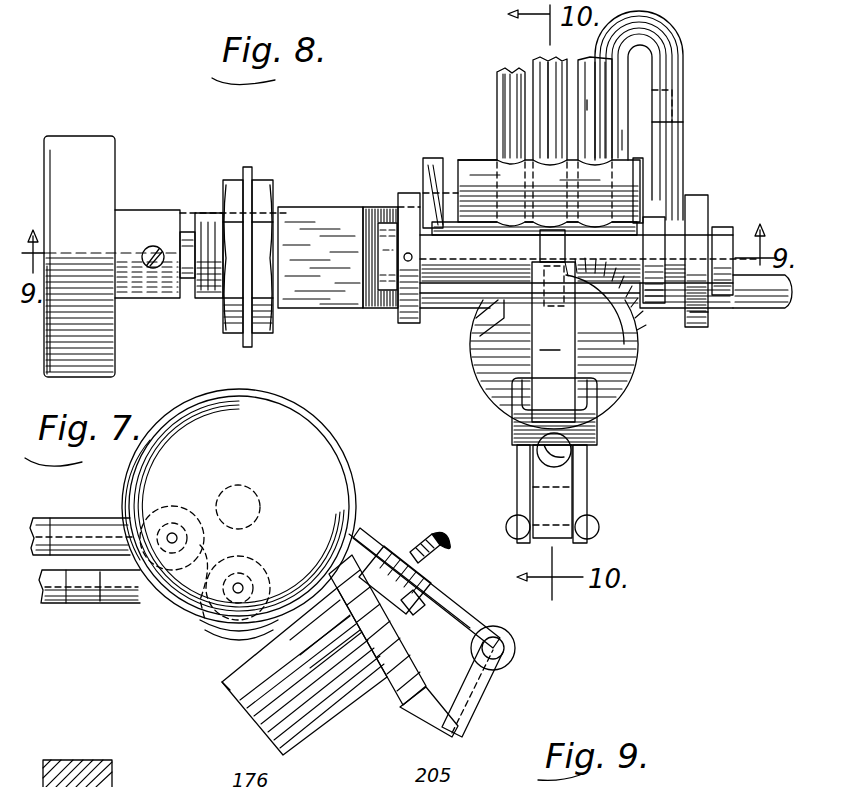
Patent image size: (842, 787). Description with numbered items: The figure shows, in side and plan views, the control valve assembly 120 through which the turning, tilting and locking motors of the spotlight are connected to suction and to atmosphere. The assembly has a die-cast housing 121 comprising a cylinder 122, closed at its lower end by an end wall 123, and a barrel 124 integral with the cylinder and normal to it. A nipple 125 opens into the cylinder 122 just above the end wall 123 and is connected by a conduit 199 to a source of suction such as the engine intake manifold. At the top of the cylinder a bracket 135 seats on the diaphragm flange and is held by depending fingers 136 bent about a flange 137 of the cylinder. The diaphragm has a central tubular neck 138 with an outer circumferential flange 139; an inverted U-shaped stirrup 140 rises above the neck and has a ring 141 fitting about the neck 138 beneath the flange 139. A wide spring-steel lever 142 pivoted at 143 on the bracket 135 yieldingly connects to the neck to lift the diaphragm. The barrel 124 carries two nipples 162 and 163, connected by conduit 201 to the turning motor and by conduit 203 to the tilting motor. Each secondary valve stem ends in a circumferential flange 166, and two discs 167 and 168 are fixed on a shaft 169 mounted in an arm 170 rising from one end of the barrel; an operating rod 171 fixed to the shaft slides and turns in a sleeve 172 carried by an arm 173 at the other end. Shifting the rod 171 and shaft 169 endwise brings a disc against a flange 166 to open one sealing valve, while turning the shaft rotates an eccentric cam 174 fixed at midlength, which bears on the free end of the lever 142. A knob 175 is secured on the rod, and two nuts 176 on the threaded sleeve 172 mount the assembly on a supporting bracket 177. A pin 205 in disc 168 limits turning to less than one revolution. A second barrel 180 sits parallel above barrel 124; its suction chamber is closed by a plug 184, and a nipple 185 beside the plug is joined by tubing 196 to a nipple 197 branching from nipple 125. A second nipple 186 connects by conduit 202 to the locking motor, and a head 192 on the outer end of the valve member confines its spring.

In FIG. 8, the control valve assembly 120 is at (425, 503).
In FIG. 7, the housing 121 is at (210, 686).
In FIG. 8, the cylinder 122 is at (536, 360).
In FIG. 7, the cylinder 122 is at (431, 401).
In FIG. 7, the end wall 123 is at (248, 718).
In FIG. 8, the barrel 124 is at (410, 388).
In FIG. 7, the barrel 124 is at (262, 565).
In FIG. 8, the nipple 125 is at (700, 318).
In FIG. 8, the bracket 135 is at (616, 398).
In FIG. 7, the depending fingers 136 is at (420, 708).
In FIG. 8, the flange 137 is at (457, 306).
In FIG. 7, the flange 137 is at (372, 700).
In FIG. 7, the neck 138 is at (345, 675).
In FIG. 7, the outer circumferential flange 139 is at (415, 612).
In FIG. 8, the stirrup 140 is at (512, 424).
In FIG. 7, the stirrup 140 is at (422, 580).
In FIG. 7, the ring 141 is at (400, 598).
In FIG. 7, the lever 142 is at (480, 632).
In FIG. 8, the pivot 143 is at (599, 527).
In FIG. 7, the pivot 143 is at (504, 648).
In FIG. 8, the nipple 162 is at (588, 106).
In FIG. 8, the nipple 163 is at (505, 106).
In FIG. 7, the nipple 163 is at (108, 600).
In FIG. 8, the circumferential flange 166 is at (390, 292).
In FIG. 8, the disc 167 is at (705, 200).
In FIG. 8, the disc 168 is at (411, 195).
In FIG. 8, the shaft 169 is at (500, 265).
In FIG. 8, the arm 170 is at (655, 305).
In FIG. 8, the operating rod 171 is at (185, 296).
In FIG. 7, the operating rod 171 is at (258, 507).
In FIG. 8, the sleeve 172 is at (323, 300).
In FIG. 8, the arm 173 is at (386, 214).
In FIG. 8, the eccentric cam 174 is at (552, 220).
In FIG. 8, the knob 175 is at (84, 142).
In FIG. 7, the knob 175 is at (345, 474).
In FIG. 8, the nuts 176 is at (262, 184).
In FIG. 8, the supporting bracket 177 is at (252, 342).
In FIG. 8, the second barrel 180 is at (465, 158).
In FIG. 8, the plug 184 is at (640, 175).
In FIG. 8, the nipple 185 is at (622, 138).
In FIG. 8, the second nipple 186 is at (548, 95).
In FIG. 8, the head 192 is at (430, 160).
In FIG. 7, the head 192 is at (172, 506).
In FIG. 8, the tubing 196 is at (672, 48).
In FIG. 8, the nipple 197 is at (672, 145).
In FIG. 8, the conduit 199 is at (768, 312).
In FIG. 8, the conduit 201 is at (590, 62).
In FIG. 8, the conduit 202 is at (545, 60).
In FIG. 7, the conduit 202 is at (42, 518).
In FIG. 8, the conduit 203 is at (497, 72).
In FIG. 7, the conduit 203 is at (55, 605).
In FIG. 8, the pin 205 is at (406, 262).